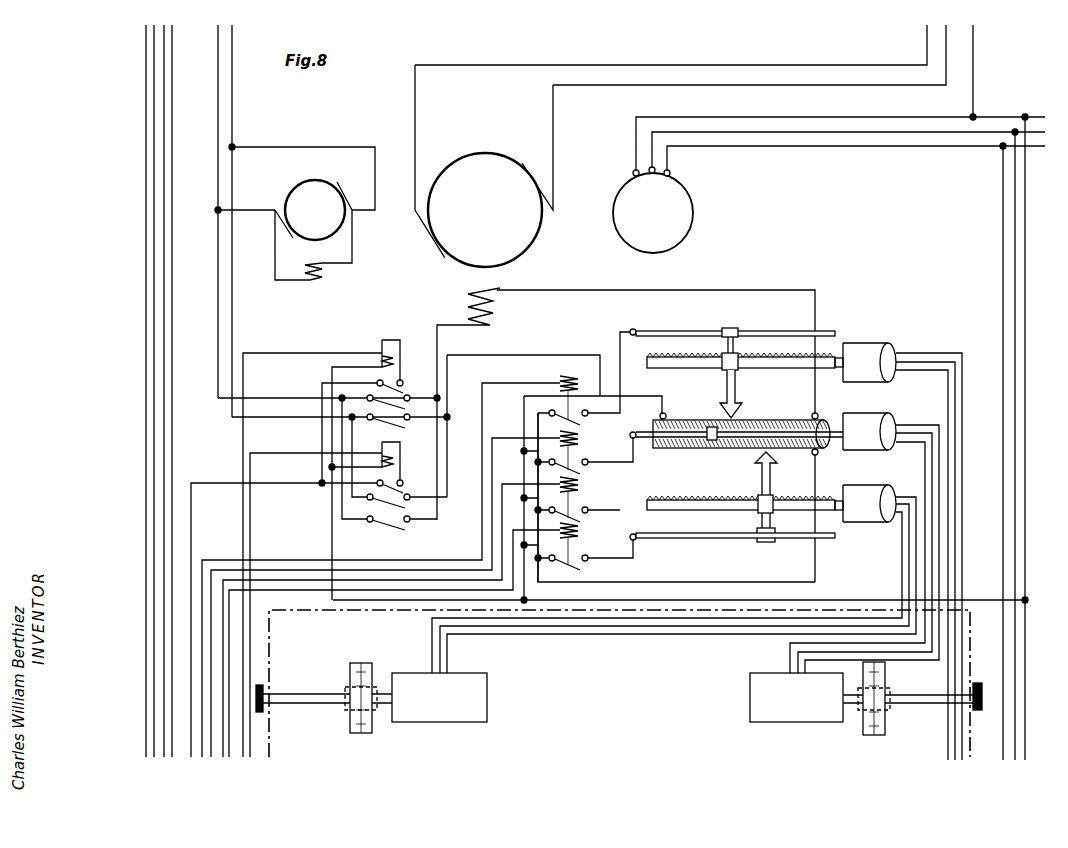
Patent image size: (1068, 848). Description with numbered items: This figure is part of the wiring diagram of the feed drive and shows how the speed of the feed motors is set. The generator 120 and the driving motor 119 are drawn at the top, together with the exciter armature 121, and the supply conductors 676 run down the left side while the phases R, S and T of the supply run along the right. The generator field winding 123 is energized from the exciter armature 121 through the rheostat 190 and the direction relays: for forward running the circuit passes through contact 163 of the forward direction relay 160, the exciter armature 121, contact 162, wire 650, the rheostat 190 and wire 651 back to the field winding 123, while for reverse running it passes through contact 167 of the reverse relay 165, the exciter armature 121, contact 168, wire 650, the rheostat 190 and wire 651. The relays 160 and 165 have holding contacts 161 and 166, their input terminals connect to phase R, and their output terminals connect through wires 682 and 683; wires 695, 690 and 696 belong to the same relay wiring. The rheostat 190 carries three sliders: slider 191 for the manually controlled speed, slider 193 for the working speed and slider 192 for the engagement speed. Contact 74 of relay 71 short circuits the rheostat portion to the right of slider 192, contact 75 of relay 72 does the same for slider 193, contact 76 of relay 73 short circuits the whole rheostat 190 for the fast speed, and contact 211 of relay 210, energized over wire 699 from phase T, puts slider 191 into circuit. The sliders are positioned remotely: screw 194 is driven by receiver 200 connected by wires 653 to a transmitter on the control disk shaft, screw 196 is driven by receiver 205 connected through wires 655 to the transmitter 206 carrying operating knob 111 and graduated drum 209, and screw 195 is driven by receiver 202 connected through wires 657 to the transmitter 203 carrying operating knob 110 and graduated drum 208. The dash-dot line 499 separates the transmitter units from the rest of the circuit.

The supply conductors 676 is at (172, 142).
The exciter armature 121 is at (295, 221).
The generator 120 is at (680, 146).
The driving motor 119 is at (829, 185).
The wire 651 is at (755, 282).
The enclosure line 696 is at (746, 582).
The field winding 123 is at (496, 306).
The wire 683 is at (318, 352).
The reverse relay 165 is at (394, 350).
The holding contact 166 is at (396, 392).
The contact 167 is at (402, 410).
The contact 168 is at (402, 430).
The forward direction relay 160 is at (400, 452).
The holding contact 161 is at (397, 496).
The contact 162 is at (410, 506).
The contact 163 is at (405, 533).
The wire 682 is at (262, 453).
The conductor 695 is at (276, 485).
The wire 650 is at (541, 354).
The relay 73 is at (567, 384).
The contact 76 is at (576, 418).
The relay 72 is at (577, 446).
The contact 75 is at (581, 466).
The relay 210 is at (577, 494).
The contact 211 is at (580, 516).
The relay 71 is at (579, 542).
The contact 74 is at (581, 563).
The screw 194 is at (783, 355).
The slider 191 is at (733, 375).
The screw 196 is at (663, 440).
The rheostat 190 is at (722, 445).
The slider 193 is at (712, 442).
The slider 192 is at (772, 468).
The screw 195 is at (664, 500).
The receiver 200 is at (868, 352).
The receiver 205 is at (872, 424).
The receiver 202 is at (870, 497).
The wires 653 is at (948, 410).
The wires 655 is at (925, 485).
The wires 657 is at (916, 551).
The machine frame boundary 499 is at (321, 612).
The operating knob 110 is at (264, 686).
The graduated drum 208 is at (366, 733).
The transmitter 203 is at (439, 697).
The transmitter 206 is at (796, 697).
The graduated drum 209 is at (873, 729).
The operating knob 111 is at (978, 683).
The wire 699 is at (295, 571).
The conductor 690 is at (366, 589).
The phase R is at (976, 72).
The phase S is at (1017, 298).
The phase T is at (1005, 277).